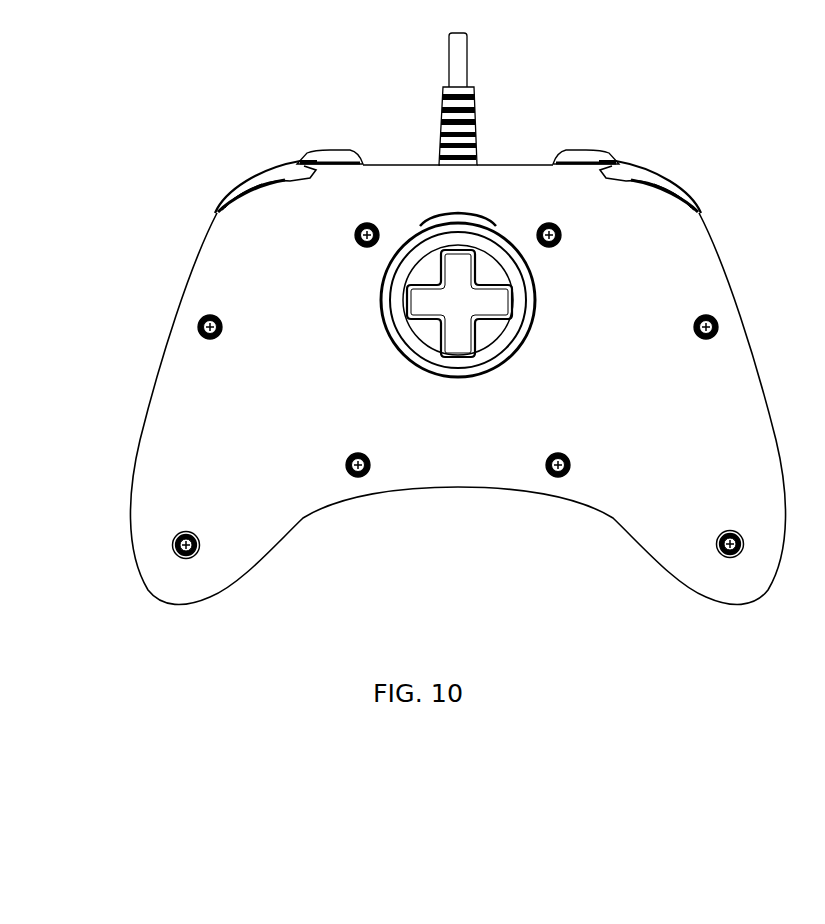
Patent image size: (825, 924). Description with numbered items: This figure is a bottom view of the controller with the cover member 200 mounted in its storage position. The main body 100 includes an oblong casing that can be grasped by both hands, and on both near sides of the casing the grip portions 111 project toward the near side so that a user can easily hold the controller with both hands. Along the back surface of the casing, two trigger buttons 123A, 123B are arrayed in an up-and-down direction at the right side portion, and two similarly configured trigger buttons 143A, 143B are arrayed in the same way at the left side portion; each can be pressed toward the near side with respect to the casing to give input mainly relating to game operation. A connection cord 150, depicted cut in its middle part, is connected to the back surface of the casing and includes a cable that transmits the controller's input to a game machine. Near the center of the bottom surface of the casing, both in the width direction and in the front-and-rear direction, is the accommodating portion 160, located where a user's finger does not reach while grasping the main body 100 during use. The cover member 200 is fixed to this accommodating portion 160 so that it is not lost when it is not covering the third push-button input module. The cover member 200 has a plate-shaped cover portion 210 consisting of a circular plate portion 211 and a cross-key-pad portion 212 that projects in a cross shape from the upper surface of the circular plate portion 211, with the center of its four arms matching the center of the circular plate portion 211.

The main body 100 is at (722, 52).
The grip portions 111 is at (152, 573).
The trigger button 123A is at (328, 157).
The trigger button 123B is at (248, 178).
The trigger button 143A is at (588, 157).
The trigger button 143B is at (655, 172).
The connection cord 150 is at (462, 52).
The accommodating portion 160 is at (385, 288).
The cover member 200 is at (493, 365).
The cover portion 210 is at (452, 412).
The circular plate portion 211 is at (432, 357).
The cross-key-pad portion 212 is at (460, 347).